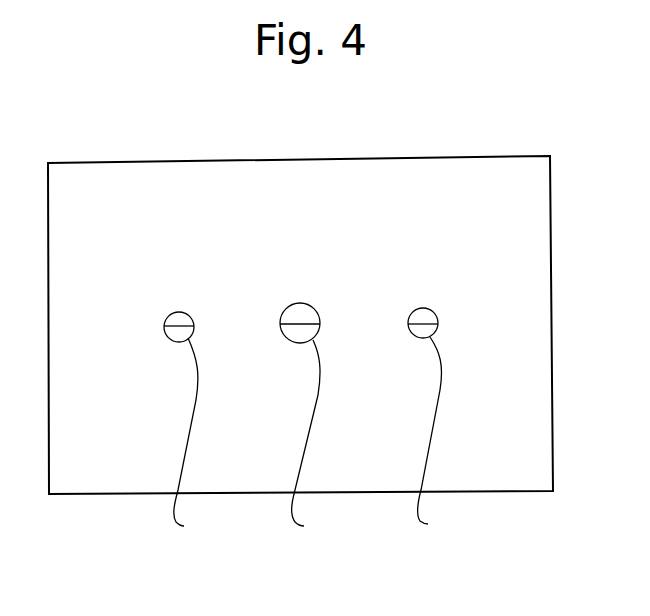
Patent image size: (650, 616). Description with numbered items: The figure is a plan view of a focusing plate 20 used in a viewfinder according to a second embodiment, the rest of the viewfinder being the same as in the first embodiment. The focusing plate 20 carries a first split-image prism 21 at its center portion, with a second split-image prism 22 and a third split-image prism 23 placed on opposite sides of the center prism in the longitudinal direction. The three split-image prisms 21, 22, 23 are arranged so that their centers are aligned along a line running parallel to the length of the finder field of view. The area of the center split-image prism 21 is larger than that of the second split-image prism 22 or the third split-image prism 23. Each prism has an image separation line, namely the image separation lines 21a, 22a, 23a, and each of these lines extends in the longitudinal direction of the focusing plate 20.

The focusing plate 20 is at (525, 245).
The first split-image prism 21 is at (318, 446).
The second split-image prism 22 is at (198, 445).
The third split-image prism 23 is at (442, 443).
The image separation line 21a is at (297, 323).
The image separation line 22a is at (180, 325).
The image separation line 23a is at (419, 323).